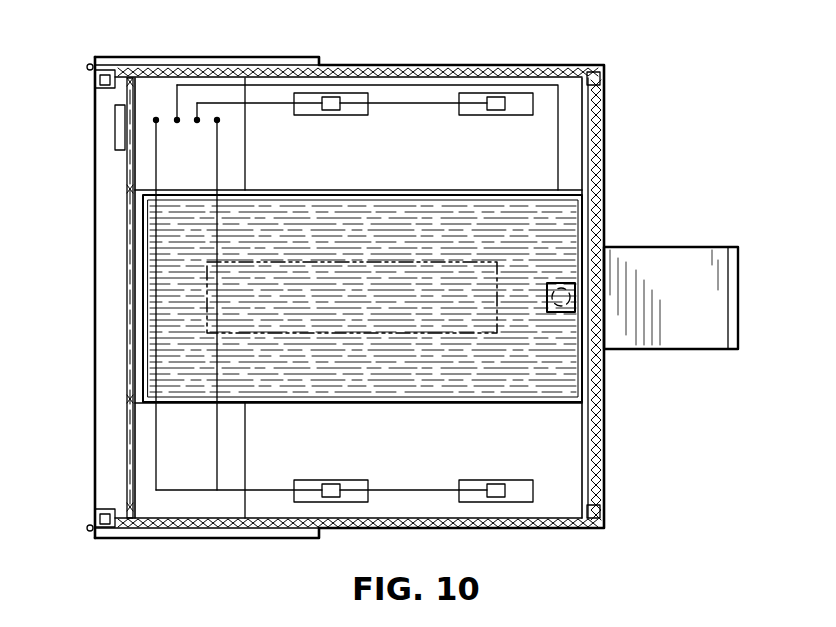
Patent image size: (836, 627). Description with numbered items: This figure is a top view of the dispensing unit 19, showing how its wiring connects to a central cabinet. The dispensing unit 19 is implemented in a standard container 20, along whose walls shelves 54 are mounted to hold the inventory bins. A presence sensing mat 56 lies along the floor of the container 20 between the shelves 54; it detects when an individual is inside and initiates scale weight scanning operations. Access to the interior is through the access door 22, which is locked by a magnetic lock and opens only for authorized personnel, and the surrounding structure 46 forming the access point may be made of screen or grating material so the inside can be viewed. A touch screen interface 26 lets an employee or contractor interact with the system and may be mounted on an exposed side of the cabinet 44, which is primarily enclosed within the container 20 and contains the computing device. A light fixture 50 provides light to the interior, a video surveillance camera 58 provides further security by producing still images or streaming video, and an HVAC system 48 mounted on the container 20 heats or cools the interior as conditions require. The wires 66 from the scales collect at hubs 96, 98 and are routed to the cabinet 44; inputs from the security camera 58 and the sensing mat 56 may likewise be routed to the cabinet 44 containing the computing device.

The dispensing unit 19 is at (80, 40).
The container 20 is at (541, 64).
The access door 22 is at (127, 300).
The touch screen interface 26 is at (115, 148).
The cabinet 44 is at (200, 173).
The surrounding structure 46 is at (127, 121).
The HVAC system 48 is at (726, 247).
The light fixture 50 is at (356, 262).
The shelves 54 is at (542, 173).
The presence sensing mat 56 is at (284, 200).
The video surveillance camera 58 is at (562, 312).
The wires 66 is at (403, 104).
The hub 96 is at (302, 116).
The hub 98 is at (331, 111).